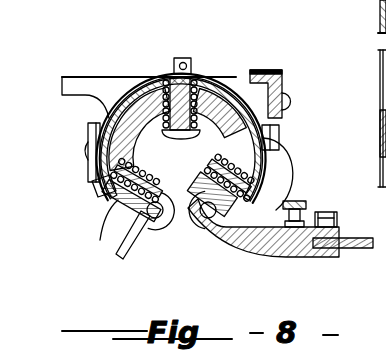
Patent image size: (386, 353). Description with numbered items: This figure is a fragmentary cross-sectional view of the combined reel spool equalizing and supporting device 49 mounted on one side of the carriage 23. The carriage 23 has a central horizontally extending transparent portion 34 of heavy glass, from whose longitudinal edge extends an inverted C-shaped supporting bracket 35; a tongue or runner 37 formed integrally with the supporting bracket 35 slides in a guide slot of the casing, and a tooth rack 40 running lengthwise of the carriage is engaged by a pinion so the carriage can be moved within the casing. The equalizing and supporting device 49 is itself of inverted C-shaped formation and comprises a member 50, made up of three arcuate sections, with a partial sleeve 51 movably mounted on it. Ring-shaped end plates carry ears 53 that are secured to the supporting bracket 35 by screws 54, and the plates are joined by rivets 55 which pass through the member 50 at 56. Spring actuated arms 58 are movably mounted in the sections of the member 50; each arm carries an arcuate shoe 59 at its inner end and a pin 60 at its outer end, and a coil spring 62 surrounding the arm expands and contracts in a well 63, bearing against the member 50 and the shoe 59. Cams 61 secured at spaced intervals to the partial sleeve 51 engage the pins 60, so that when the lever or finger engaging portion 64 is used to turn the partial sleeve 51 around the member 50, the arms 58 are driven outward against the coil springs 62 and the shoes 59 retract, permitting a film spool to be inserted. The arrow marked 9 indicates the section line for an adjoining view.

The carriage 23 is at (81, 75).
The tongue or runner 37 is at (66, 85).
The rivet passage through member 56 is at (122, 118).
The member 50 is at (128, 100).
The spring actuated arm or finger 58 is at (186, 53).
The cam 61 is at (166, 86).
The rivet 55 is at (109, 117).
The arcuate shoe 59 is at (187, 139).
The ear 53 is at (88, 130).
The screw 54 is at (84, 148).
The combined reel spool equalizing and supporting device 49 is at (84, 171).
The section arrow 9 is at (283, 93).
The well 63 is at (117, 222).
The coil spring 62 is at (163, 212).
The lever or finger engaging portion 64 is at (128, 250).
The tooth rack 40 is at (282, 71).
The partial sleeve 51 is at (203, 80).
The supporting bracket 35 is at (284, 250).
The transparent portion 34 is at (345, 249).
The pin 60 is at (280, 200).